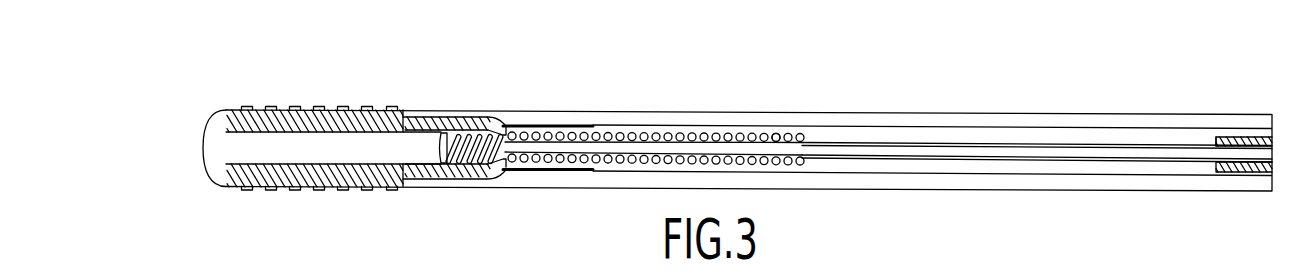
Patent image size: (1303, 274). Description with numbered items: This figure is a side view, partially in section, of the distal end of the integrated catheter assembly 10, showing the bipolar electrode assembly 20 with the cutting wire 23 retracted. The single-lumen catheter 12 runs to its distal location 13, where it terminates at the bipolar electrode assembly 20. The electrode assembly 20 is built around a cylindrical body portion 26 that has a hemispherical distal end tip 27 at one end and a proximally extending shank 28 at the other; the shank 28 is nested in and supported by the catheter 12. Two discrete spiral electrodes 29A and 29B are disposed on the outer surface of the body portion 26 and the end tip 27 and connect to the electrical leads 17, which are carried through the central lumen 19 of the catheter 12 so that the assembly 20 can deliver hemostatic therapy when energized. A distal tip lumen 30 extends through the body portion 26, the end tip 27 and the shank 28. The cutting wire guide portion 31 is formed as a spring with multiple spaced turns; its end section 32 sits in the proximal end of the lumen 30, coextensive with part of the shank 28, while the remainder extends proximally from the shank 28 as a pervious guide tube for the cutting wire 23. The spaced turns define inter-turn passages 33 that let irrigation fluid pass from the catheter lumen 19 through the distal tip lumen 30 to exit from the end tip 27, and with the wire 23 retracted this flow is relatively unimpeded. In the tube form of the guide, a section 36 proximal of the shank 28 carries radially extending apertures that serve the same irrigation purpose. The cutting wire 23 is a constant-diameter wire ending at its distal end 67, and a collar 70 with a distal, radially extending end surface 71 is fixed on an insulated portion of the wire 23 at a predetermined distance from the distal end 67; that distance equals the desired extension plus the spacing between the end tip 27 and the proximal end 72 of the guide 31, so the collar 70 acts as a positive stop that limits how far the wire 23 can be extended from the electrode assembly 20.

The integrated catheter assembly 10 is at (1009, 97).
The catheter 12 is at (946, 110).
The distal location 13 is at (708, 95).
The electrical leads 17 is at (578, 124).
The central lumen 19 is at (847, 141).
The bipolar electrode assembly 20 is at (363, 92).
The cutting wire 23 is at (1068, 143).
The cylindrical body portion 26 is at (237, 118).
The hemispherical distal end tip 27 is at (211, 127).
The proximally extending shank 28 is at (442, 128).
The spiral electrode 29A is at (282, 105).
The spiral electrode 29B is at (252, 105).
The distal tip lumen 30 is at (222, 152).
The cutting wire guide portion 31 is at (655, 133).
The end section 32 is at (479, 132).
The inter-turn passages 33 is at (509, 130).
The second section 36 is at (442, 157).
The distal end 67 is at (510, 162).
The collar 70 is at (1245, 137).
The distal end surface 71 is at (1216, 144).
The proximal end 72 is at (778, 134).